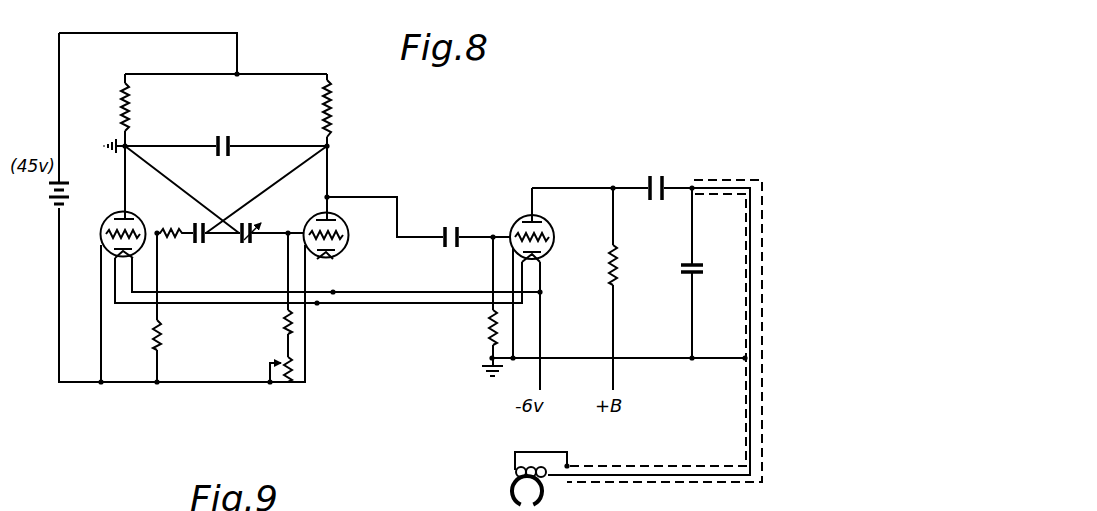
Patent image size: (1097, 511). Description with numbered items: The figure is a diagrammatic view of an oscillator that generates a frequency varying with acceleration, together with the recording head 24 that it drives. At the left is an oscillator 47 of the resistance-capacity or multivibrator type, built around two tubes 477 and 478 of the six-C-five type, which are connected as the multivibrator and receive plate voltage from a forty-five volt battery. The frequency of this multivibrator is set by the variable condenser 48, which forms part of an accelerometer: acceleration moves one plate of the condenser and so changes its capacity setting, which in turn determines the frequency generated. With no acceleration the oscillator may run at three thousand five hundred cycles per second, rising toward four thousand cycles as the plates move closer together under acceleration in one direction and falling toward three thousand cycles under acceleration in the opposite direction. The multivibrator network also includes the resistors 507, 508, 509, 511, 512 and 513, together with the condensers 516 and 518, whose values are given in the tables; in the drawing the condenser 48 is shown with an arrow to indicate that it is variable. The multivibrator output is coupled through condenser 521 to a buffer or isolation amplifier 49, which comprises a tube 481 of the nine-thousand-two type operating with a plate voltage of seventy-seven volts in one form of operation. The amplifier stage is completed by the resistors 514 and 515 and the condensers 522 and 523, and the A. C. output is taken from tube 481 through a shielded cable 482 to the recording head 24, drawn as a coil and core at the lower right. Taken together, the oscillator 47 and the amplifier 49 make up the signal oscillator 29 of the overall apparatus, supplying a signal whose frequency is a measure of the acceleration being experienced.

The resistor 507 is at (130, 105).
The resistor 508 is at (322, 100).
The condenser 516 is at (222, 135).
The oscillator 47 is at (349, 143).
The signal oscillator 29 is at (459, 156).
The tube 477 is at (105, 218).
The tube 478 is at (314, 214).
The tube 481 is at (553, 236).
The condenser 518 is at (191, 225).
The variable condenser 48 is at (250, 246).
The resistor 509 is at (172, 238).
The resistor 511 is at (162, 333).
The resistor 512 is at (283, 320).
The resistor 513 is at (298, 368).
The condenser 521 is at (452, 225).
The amplifier 49 is at (578, 182).
The resistor 515 is at (610, 264).
The condenser 522 is at (657, 175).
The condenser 523 is at (684, 272).
The resistor 514 is at (489, 325).
The shielded cable 482 is at (663, 472).
The recording head 24 is at (512, 489).